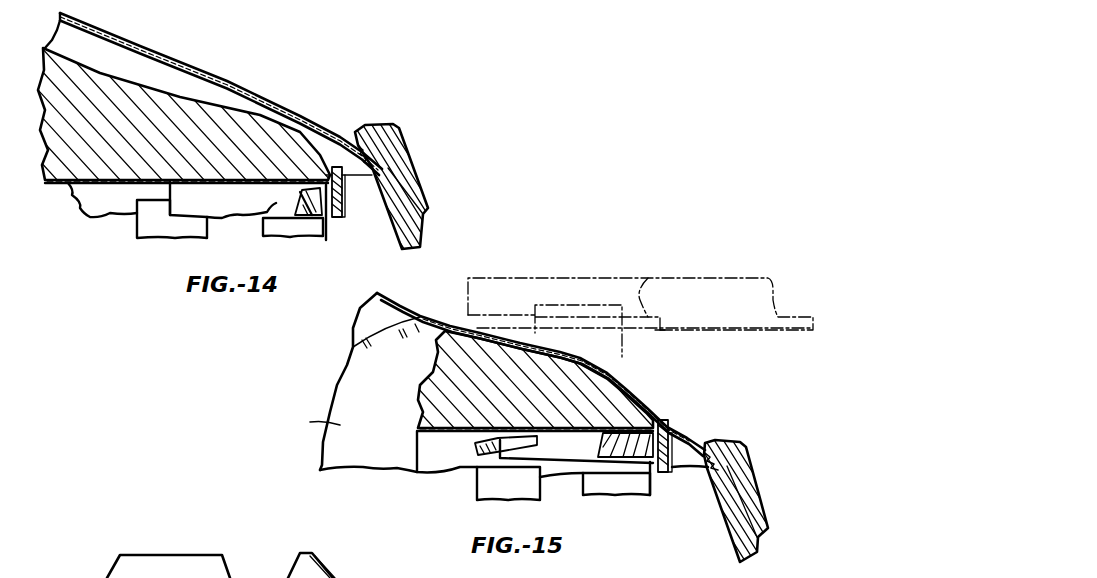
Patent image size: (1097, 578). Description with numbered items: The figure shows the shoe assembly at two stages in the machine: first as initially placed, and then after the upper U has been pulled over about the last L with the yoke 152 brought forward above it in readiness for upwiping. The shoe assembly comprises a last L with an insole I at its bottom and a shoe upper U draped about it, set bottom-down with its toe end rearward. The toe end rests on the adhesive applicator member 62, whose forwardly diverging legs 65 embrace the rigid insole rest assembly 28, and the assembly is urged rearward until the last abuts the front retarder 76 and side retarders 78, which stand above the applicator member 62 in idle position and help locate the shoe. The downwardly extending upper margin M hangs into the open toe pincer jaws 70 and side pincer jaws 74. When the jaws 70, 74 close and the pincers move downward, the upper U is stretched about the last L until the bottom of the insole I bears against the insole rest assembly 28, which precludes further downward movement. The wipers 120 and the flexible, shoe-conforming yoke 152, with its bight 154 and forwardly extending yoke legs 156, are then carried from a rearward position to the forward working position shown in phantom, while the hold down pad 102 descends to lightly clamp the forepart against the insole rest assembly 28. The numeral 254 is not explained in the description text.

In FIG. 14, the shoe upper U is at (157, 43).
In FIG. 15, the shoe upper U is at (340, 425).
In FIG. 14, the last L is at (53, 150).
In FIG. 15, the last L is at (433, 398).
In FIG. 14, the insole I is at (85, 186).
In FIG. 15, the insole I is at (448, 436).
In FIG. 14, the upper margin M is at (102, 206).
In FIG. 15, the upper margin M is at (468, 468).
In FIG. 15, the insole rest assembly 28 is at (537, 443).
In FIG. 14, the adhesive applicator member 62 is at (262, 219).
In FIG. 15, the adhesive applicator member 62 is at (645, 460).
In FIG. 14, the legs 65 is at (215, 207).
In FIG. 15, the legs 65 is at (577, 458).
In FIG. 14, the toe pincer jaws 70 is at (375, 128).
In FIG. 15, the toe pincer jaws 70 is at (733, 462).
In FIG. 14, the side pincer jaws 74 is at (148, 225).
In FIG. 15, the side pincer jaws 74 is at (507, 490).
In FIG. 14, the front retarder 76 is at (340, 213).
In FIG. 15, the front retarder 76 is at (660, 472).
In FIG. 14, the side retarders 78 is at (290, 228).
In FIG. 15, the side retarders 78 is at (600, 485).
In FIG. 15, the hold down pad 102 is at (607, 342).
In FIG. 15, the wipers 120 is at (693, 328).
In FIG. 15, the yoke 152 is at (627, 264).
In FIG. 15, the bight 154 is at (653, 272).
In FIG. 15, the yoke legs 156 is at (557, 277).
In FIG. 15, the element 254 is at (62, 577).